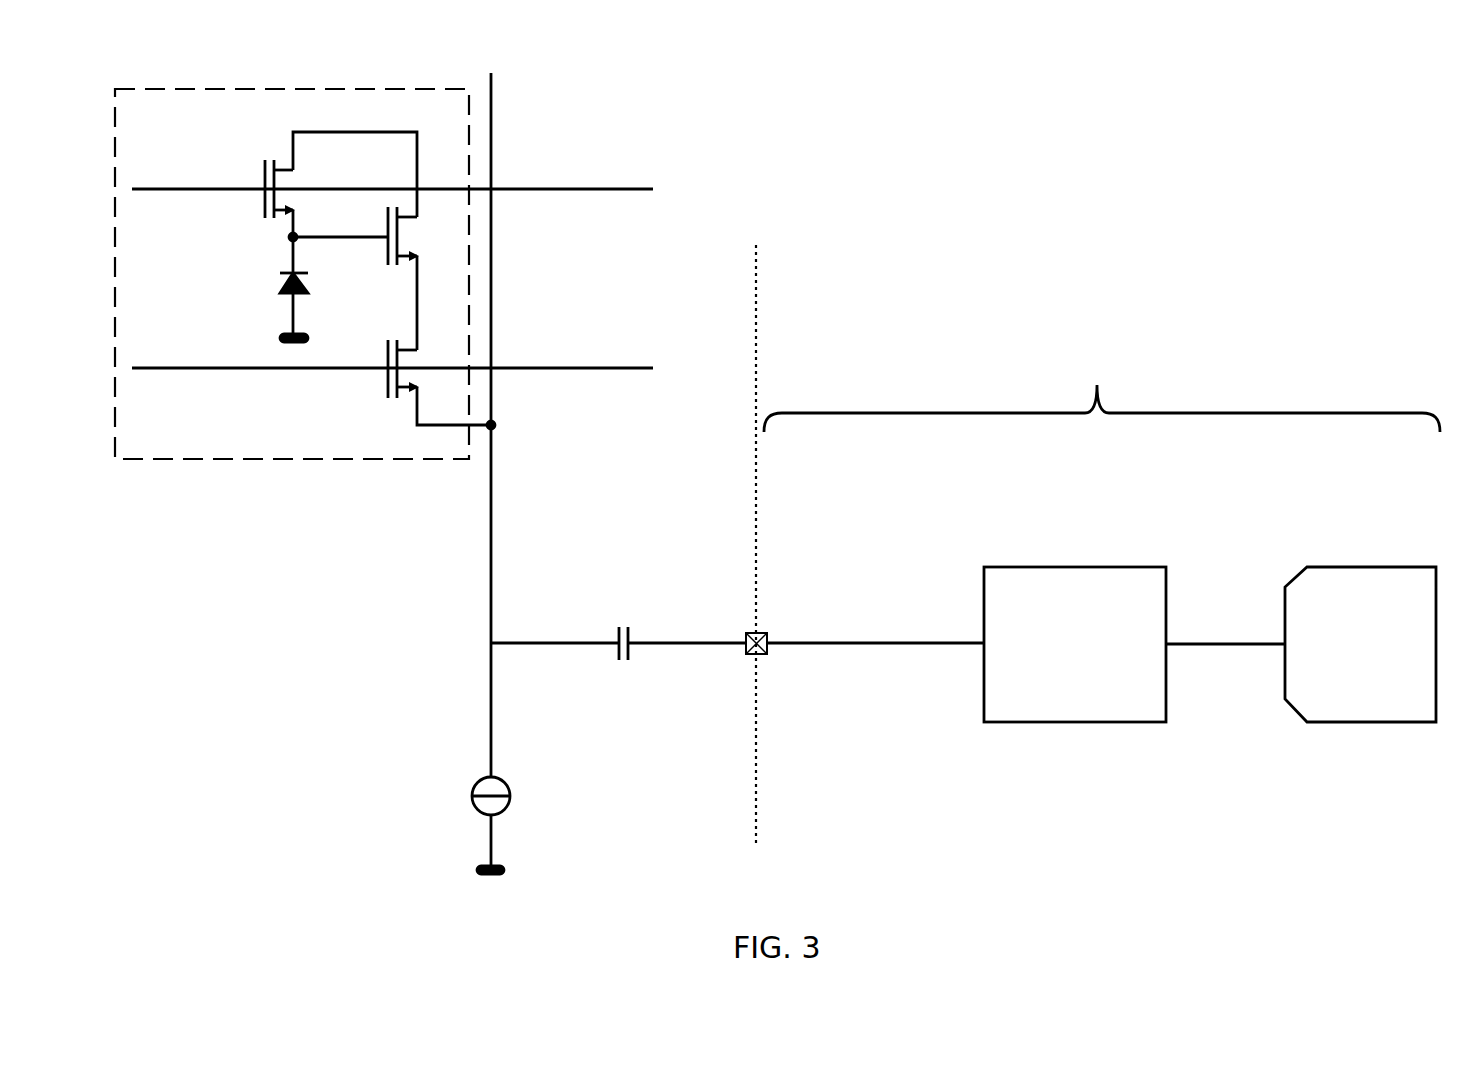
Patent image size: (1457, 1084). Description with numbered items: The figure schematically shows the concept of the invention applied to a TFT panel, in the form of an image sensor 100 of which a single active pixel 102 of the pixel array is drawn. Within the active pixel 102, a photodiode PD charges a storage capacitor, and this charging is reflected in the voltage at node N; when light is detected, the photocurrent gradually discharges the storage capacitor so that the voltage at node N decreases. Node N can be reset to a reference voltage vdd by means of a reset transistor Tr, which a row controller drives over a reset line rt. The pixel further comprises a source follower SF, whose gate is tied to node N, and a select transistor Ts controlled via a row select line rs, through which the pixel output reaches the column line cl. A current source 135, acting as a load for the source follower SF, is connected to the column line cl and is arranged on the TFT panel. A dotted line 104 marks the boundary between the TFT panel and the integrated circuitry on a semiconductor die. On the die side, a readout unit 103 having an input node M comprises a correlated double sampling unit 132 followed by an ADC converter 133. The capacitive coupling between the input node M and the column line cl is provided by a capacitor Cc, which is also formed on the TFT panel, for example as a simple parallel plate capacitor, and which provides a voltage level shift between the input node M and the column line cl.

The image sensor 100 is at (823, 89).
The active pixel 102 is at (223, 468).
The readout unit 103 is at (1102, 390).
The dotted line 104 is at (753, 488).
The correlated double sampling unit 132 is at (1079, 565).
The ADC converter 133 is at (1362, 565).
The current source 135 is at (513, 795).
The reset transistor Tr is at (259, 168).
The source follower SF is at (417, 242).
The select transistor Ts is at (388, 383).
The photodiode PD is at (280, 280).
The node N is at (293, 237).
The reference voltage vdd is at (355, 156).
The reset line rt is at (568, 189).
The row select line rs is at (617, 368).
The column line cl is at (491, 548).
The capacitor Cc is at (618, 667).
The input node M is at (848, 625).